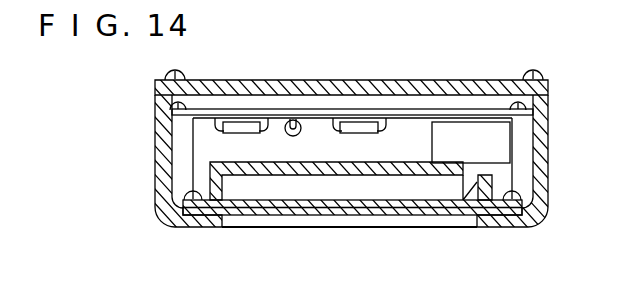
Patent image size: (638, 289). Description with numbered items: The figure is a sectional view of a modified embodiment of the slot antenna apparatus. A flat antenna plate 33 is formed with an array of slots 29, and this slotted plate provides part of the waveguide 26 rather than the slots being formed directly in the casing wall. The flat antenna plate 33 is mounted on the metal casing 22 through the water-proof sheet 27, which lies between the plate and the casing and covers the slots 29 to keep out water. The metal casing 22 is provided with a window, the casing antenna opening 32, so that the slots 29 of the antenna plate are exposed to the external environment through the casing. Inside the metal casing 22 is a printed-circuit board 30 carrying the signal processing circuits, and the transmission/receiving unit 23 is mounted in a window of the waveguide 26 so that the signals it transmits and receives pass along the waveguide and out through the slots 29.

The metal casing 22 is at (549, 116).
The transmission/receiving unit 23 is at (432, 142).
The waveguide 26 is at (342, 162).
The water-proof sheet 27 is at (305, 210).
The slots 29 is at (396, 206).
The printed-circuit board 30 is at (431, 110).
The casing antenna opening 32 is at (449, 228).
The flat antenna plate 33 is at (528, 211).